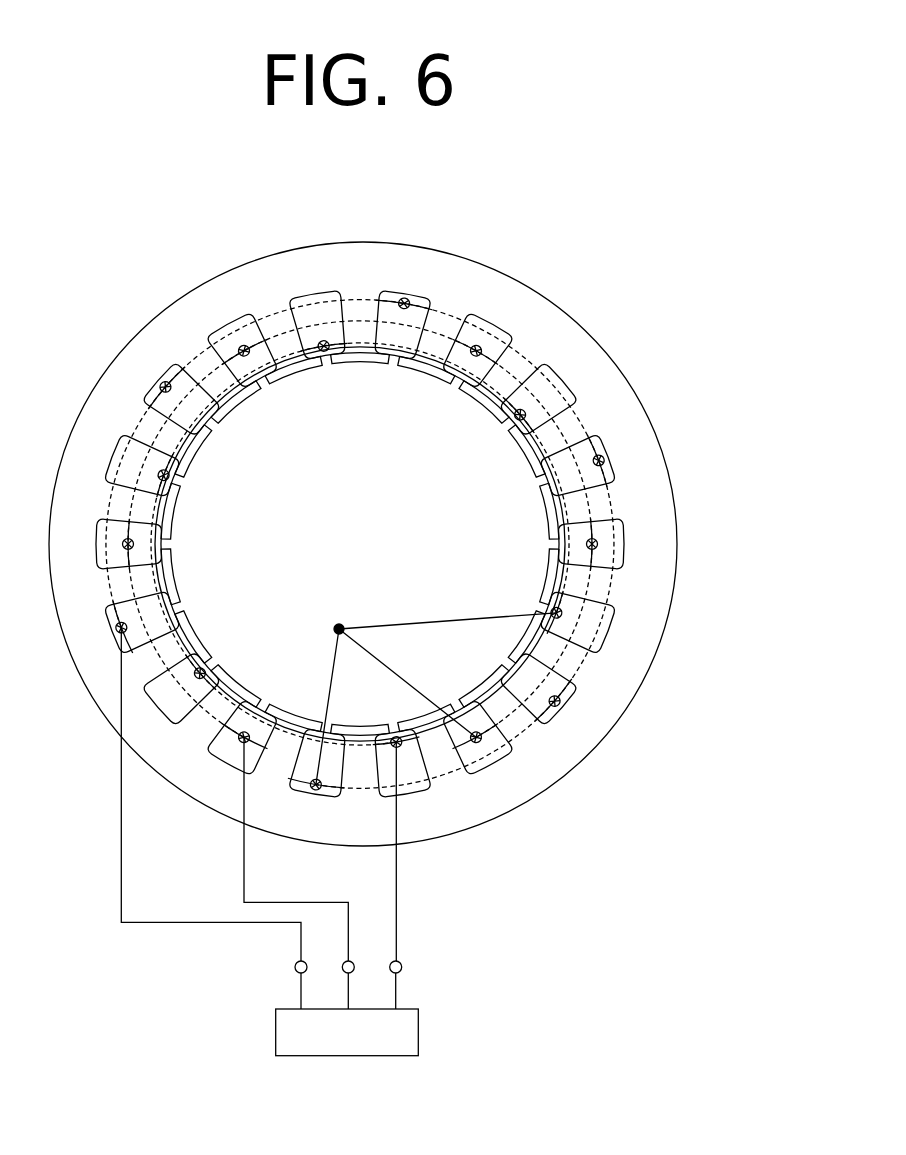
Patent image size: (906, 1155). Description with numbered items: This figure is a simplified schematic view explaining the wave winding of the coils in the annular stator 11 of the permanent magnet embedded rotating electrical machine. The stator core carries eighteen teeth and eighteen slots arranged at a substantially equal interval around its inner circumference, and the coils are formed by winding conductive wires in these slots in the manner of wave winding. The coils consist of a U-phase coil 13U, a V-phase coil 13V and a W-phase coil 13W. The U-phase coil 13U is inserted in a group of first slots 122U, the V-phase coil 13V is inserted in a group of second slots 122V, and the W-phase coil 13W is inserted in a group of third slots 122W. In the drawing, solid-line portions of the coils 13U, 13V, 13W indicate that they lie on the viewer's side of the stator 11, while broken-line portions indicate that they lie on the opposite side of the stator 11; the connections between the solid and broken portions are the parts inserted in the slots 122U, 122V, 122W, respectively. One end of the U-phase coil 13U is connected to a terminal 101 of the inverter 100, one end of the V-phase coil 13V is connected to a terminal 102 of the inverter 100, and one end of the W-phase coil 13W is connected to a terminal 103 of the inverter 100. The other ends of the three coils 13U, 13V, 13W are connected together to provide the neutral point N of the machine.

The stator 11 is at (565, 281).
The U-phase coil 13U is at (278, 314).
The V-phase coil 13V is at (359, 321).
The W-phase coil 13W is at (430, 358).
The first slots 122U is at (418, 357).
The second slots 122V is at (262, 378).
The third slots 122W is at (320, 297).
The neutral point N is at (340, 624).
The inverter 100 is at (418, 1030).
The terminal 101 is at (290, 967).
The terminal 102 is at (344, 962).
The terminal 103 is at (402, 967).